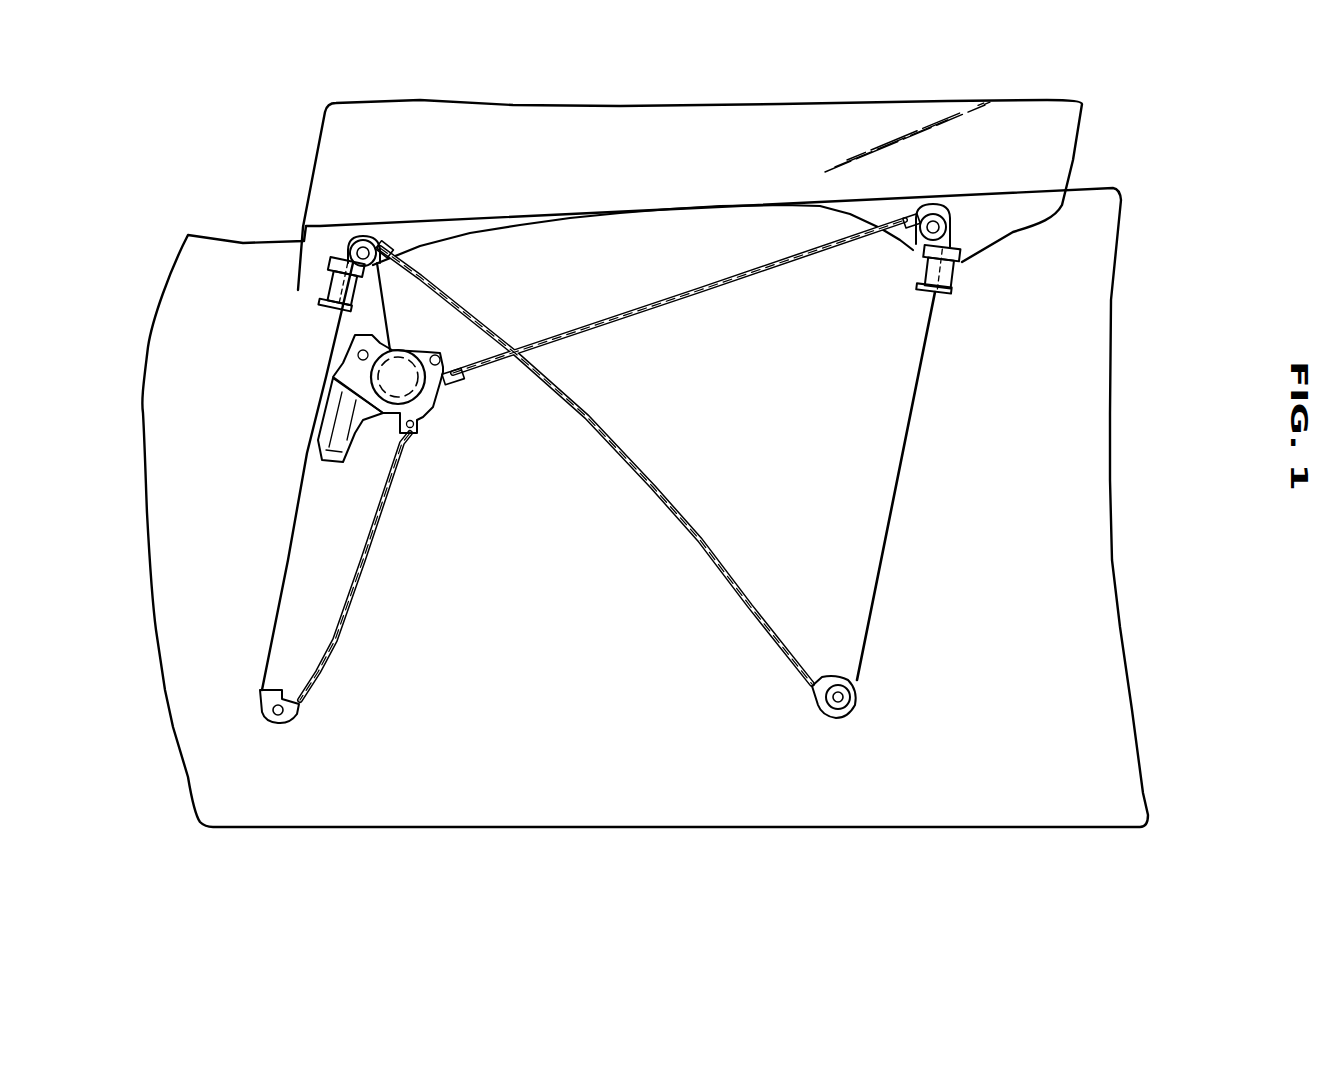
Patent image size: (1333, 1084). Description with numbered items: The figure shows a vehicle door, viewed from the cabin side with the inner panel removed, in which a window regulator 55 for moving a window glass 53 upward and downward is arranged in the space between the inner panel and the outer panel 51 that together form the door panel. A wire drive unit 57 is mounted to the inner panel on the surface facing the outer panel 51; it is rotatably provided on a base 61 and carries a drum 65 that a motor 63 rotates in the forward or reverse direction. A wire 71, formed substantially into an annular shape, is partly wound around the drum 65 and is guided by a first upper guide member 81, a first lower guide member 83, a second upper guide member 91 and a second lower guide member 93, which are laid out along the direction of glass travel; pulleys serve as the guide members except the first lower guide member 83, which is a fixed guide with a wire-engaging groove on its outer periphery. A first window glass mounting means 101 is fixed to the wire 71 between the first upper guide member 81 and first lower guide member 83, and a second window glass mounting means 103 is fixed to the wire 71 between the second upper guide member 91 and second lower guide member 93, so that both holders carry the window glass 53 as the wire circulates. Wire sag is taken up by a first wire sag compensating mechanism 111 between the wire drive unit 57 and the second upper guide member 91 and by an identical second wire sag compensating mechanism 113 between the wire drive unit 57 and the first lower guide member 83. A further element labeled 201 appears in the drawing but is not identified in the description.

The outer panel 51 is at (913, 763).
The window glass 53 is at (363, 110).
The window regulator 55 is at (673, 548).
The wire drive unit 57 is at (409, 345).
The base 61 is at (335, 352).
The motor 63 is at (317, 420).
The drum 65 is at (370, 385).
The wire 71 is at (293, 520).
The first upper guide member 81 is at (350, 247).
The first lower guide member 83 is at (272, 722).
The second upper guide member 91 is at (932, 204).
The second lower guide member 93 is at (843, 718).
The first window glass mounting means 101 is at (323, 303).
The second window glass mounting means 103 is at (962, 262).
The first wire sag compensating mechanism 111 is at (657, 277).
The second wire sag compensating mechanism 113 is at (378, 595).
The cable 201 is at (852, 232).